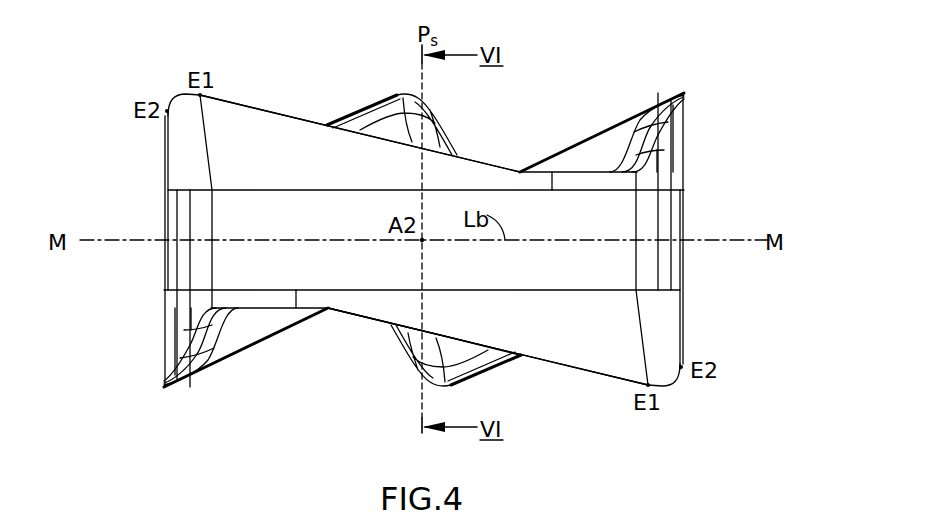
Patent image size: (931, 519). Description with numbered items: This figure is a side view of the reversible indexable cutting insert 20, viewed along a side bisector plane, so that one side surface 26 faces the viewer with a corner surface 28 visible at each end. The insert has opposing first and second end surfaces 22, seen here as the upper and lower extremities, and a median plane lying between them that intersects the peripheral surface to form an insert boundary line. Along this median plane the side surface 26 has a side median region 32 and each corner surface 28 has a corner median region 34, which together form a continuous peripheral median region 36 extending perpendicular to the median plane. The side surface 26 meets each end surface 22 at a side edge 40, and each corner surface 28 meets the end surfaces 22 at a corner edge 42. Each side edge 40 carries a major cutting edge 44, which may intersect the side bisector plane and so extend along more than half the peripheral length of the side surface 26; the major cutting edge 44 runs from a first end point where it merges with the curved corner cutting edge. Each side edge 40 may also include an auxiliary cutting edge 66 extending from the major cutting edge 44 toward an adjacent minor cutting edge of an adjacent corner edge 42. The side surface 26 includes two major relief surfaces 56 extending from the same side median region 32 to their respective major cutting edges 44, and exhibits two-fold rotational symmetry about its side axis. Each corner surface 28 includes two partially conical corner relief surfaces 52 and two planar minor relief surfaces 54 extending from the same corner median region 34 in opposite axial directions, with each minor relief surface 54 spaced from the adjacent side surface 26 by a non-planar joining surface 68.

The cutting insert 20 is at (687, 80).
The end surface 22 is at (583, 147).
The side surface 26 is at (440, 207).
The corner surface 28 is at (668, 218).
The side median region 32 is at (353, 267).
The corner median region 34 is at (187, 272).
The peripheral median region 36 is at (400, 267).
The side edge 40 is at (315, 118).
The corner edge 42 is at (180, 92).
The major cutting edge 44 is at (240, 98).
The corner relief surface 52 is at (205, 160).
The minor relief surface 54 is at (663, 155).
The major relief surface 56 is at (280, 160).
The auxiliary cutting edge 66 is at (560, 172).
The joining surface 68 is at (647, 183).